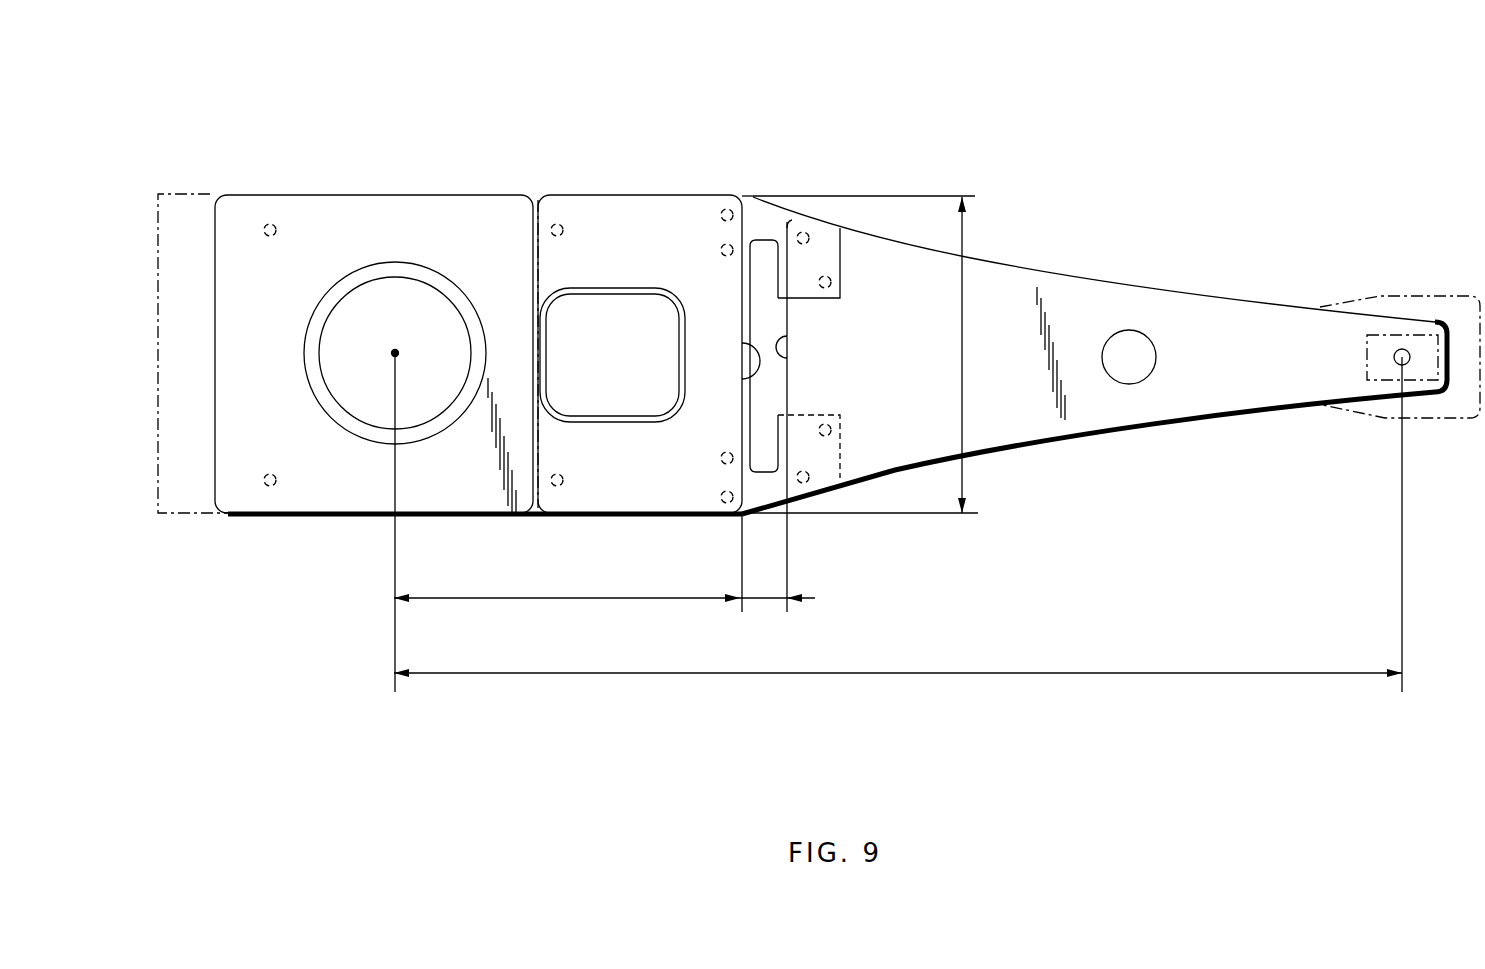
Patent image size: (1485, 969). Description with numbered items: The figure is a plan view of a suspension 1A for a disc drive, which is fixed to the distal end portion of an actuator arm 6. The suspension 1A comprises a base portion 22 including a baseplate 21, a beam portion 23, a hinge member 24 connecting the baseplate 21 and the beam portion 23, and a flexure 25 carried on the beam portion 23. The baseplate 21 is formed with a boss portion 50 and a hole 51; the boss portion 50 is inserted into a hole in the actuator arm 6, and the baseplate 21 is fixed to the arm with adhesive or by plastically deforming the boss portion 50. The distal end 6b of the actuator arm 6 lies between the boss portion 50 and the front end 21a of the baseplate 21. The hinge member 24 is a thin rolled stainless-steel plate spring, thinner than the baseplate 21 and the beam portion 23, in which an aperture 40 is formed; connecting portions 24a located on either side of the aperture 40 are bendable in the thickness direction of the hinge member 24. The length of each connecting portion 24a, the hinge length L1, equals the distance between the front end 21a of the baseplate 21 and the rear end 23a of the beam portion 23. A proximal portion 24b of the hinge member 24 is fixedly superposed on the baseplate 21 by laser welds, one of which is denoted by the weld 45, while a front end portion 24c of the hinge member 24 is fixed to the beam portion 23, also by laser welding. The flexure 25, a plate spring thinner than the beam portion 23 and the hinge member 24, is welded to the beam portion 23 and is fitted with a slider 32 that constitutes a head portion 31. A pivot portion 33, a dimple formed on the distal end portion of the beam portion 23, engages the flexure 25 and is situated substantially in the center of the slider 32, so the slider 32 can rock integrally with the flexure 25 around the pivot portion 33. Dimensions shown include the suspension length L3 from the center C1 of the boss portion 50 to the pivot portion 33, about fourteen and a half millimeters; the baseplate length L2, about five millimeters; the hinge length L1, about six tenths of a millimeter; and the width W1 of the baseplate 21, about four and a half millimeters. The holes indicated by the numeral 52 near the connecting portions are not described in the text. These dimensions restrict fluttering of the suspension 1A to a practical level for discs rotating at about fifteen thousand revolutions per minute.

The suspension for disc drive 1A is at (1081, 120).
The actuator arm 6 is at (192, 193).
The distal end of the actuator arm 6b is at (542, 427).
The baseplate 21 is at (333, 210).
The front end of the baseplate 21a is at (748, 366).
The base portion 22 is at (470, 186).
The beam portion 23 is at (1065, 290).
The rear end of the beam portion 23a is at (790, 357).
The hinge member 24 is at (763, 197).
The connecting portions 24a is at (790, 197).
The proximal portion of the hinge member 24b is at (645, 235).
The front end portion of the hinge member 24c is at (830, 299).
The flexure 25 is at (1435, 420).
The head portion 31 is at (1449, 280).
The slider 32 is at (1390, 385).
The pivot portion 33 is at (1402, 348).
The aperture 40 is at (763, 275).
The weld 45 is at (557, 215).
The boss portion 50 is at (410, 270).
The hole 51 is at (602, 310).
The tab holes 52 is at (812, 236).
The center of the boss portion C1 is at (393, 350).
The width of the baseplate W1 is at (876, 354).
The hinge length L1 is at (777, 575).
The baseplate length L2 is at (567, 616).
The suspension length L3 is at (898, 691).